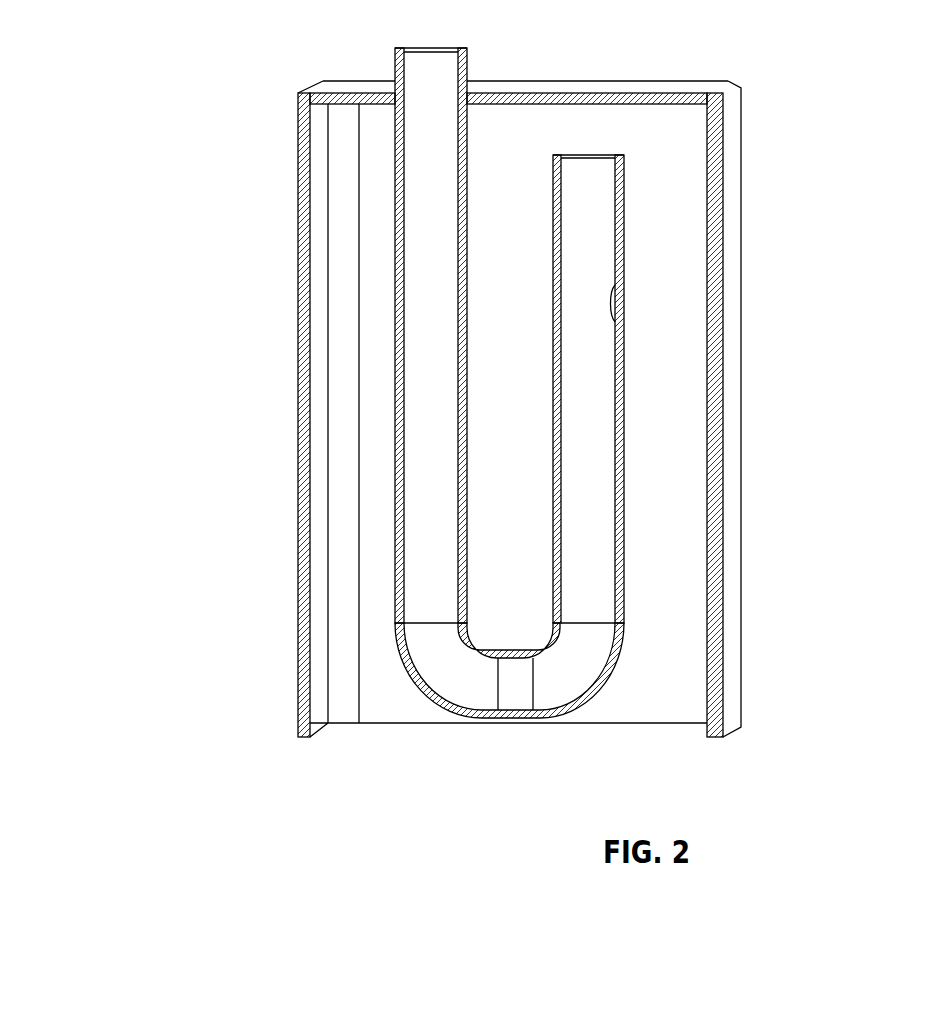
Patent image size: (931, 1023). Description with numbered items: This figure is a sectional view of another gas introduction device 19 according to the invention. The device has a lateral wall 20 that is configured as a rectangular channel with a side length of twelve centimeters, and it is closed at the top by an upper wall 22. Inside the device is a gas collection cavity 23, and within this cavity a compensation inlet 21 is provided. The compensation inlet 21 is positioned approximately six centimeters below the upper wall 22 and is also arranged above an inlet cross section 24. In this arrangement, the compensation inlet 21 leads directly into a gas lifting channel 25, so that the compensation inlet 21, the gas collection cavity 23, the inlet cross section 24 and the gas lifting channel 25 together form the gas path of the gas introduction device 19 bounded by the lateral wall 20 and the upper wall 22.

The gas introduction device 19 is at (158, 171).
The lateral wall 20 is at (715, 470).
The compensation inlet 21 is at (618, 300).
The upper wall 22 is at (594, 97).
The gas collection cavity 23 is at (685, 548).
The inlet cross section 24 is at (433, 637).
The gas lifting channel 25 is at (598, 592).